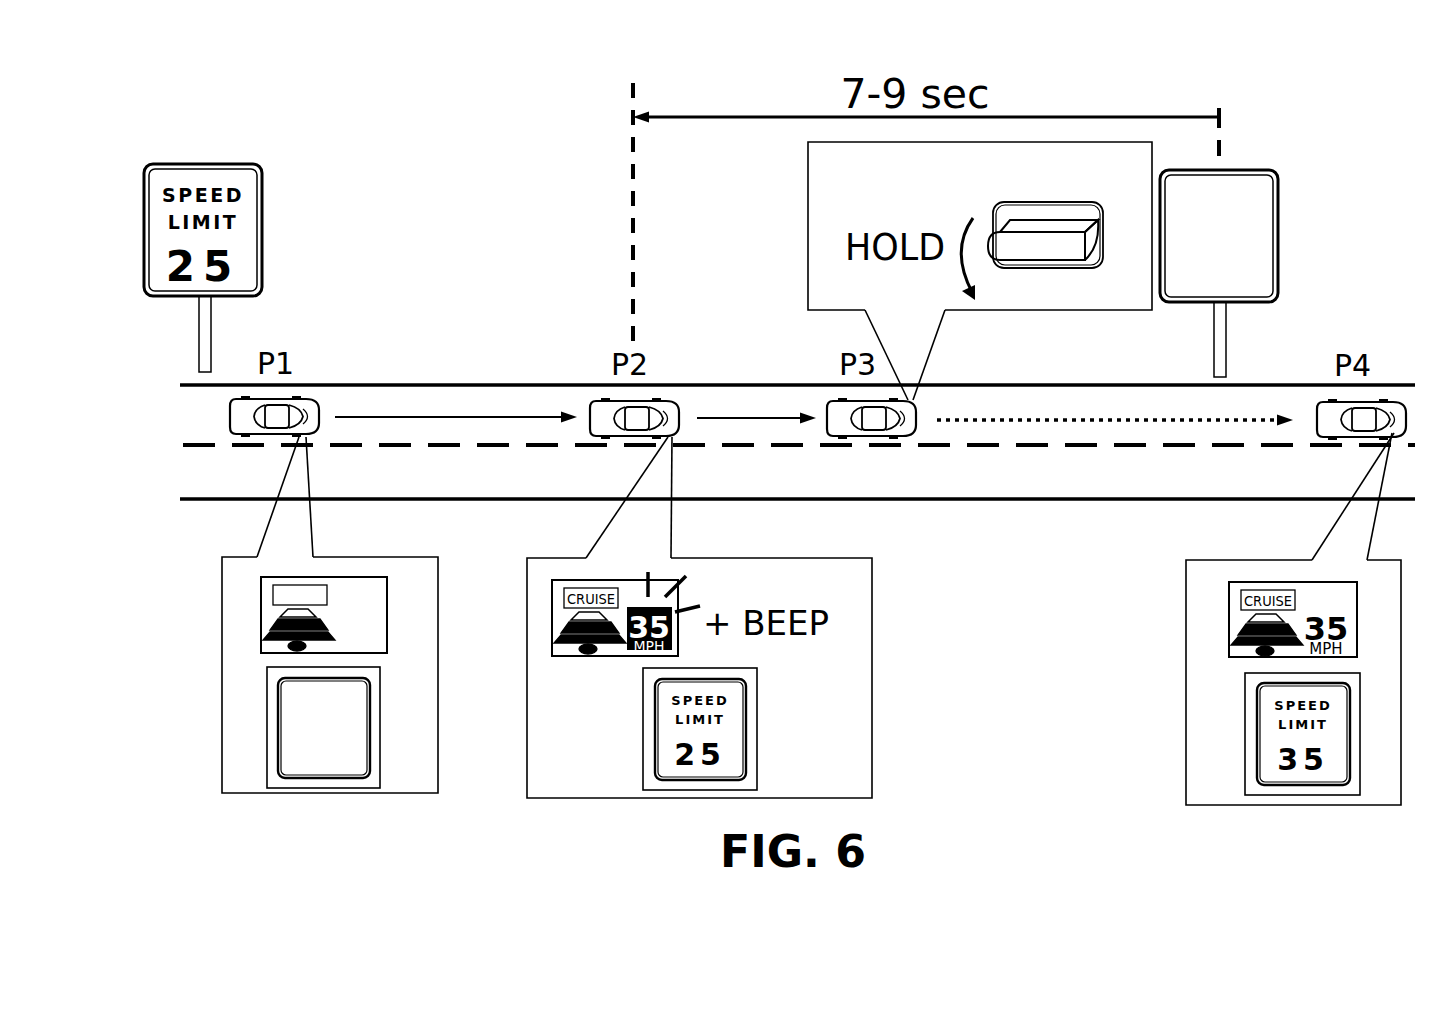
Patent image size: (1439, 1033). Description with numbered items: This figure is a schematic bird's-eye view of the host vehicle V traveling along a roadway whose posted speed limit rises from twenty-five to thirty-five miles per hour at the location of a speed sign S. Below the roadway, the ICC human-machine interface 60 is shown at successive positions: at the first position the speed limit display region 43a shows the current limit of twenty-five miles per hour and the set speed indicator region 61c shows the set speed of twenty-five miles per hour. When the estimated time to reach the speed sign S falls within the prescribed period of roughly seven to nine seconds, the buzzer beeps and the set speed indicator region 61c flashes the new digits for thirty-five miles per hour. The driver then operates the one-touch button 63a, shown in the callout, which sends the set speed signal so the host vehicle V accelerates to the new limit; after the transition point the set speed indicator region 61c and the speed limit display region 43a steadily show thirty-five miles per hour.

The host vehicle V is at (336, 397).
The speed sign S is at (1279, 192).
The one-touch button 63a is at (1000, 245).
The ICC human-machine interface 60 is at (334, 615).
The set speed indicator region 61c is at (380, 618).
The speed limit display region 43a is at (382, 735).